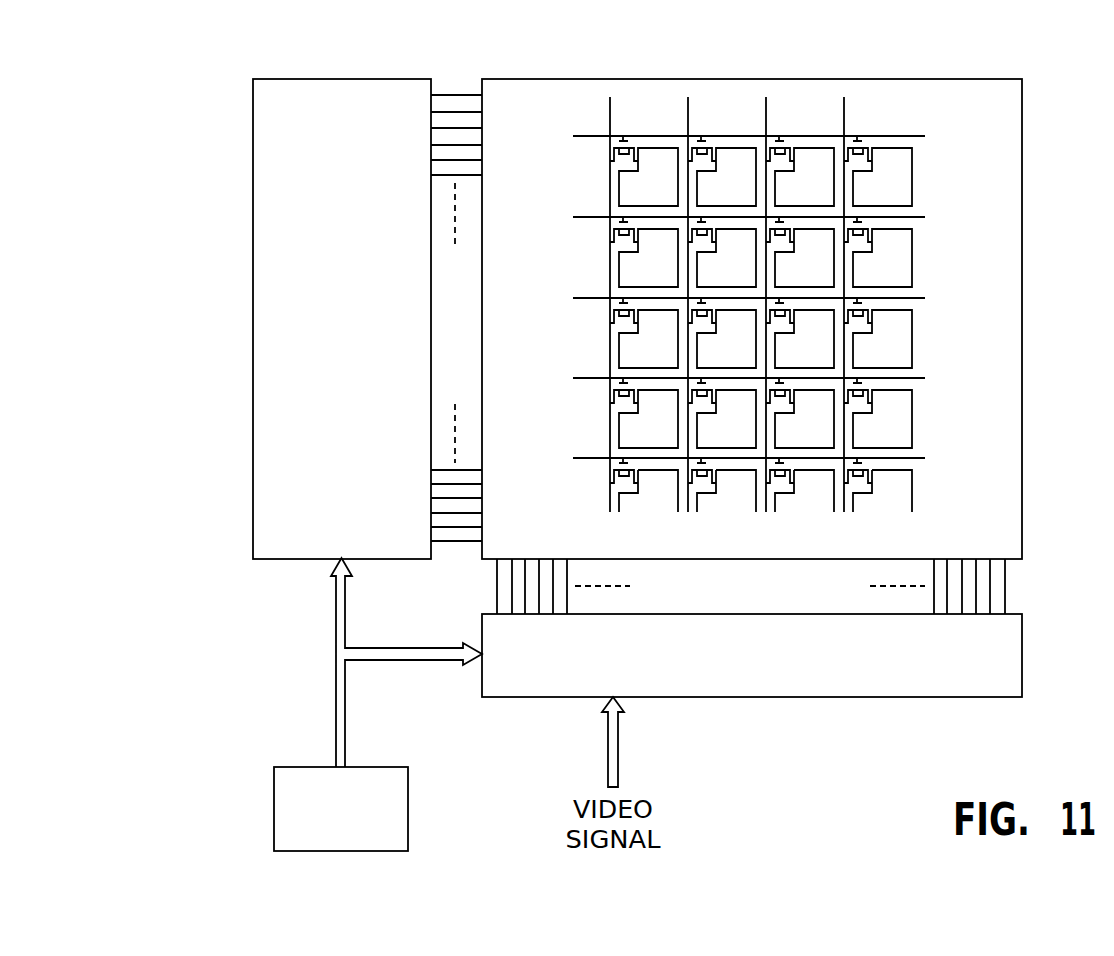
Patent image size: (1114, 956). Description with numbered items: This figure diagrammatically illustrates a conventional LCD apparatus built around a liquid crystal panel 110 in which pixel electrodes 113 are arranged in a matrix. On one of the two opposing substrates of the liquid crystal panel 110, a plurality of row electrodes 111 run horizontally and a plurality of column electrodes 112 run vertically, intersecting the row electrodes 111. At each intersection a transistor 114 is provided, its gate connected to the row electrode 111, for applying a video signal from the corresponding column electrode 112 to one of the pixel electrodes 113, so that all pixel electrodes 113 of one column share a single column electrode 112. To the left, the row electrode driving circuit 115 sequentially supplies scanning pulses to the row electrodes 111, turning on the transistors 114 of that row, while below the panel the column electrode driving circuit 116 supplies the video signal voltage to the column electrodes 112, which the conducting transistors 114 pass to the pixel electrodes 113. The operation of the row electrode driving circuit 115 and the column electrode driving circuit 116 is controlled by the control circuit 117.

The liquid crystal panel 110 is at (510, 79).
The row electrode 111 is at (586, 136).
The column electrode 112 is at (689, 115).
The pixel electrode 113 is at (637, 197).
The transistor 114 is at (640, 140).
The row electrode driving circuit 115 is at (253, 187).
The column electrode driving circuit 116 is at (860, 699).
The control circuit 117 is at (274, 786).